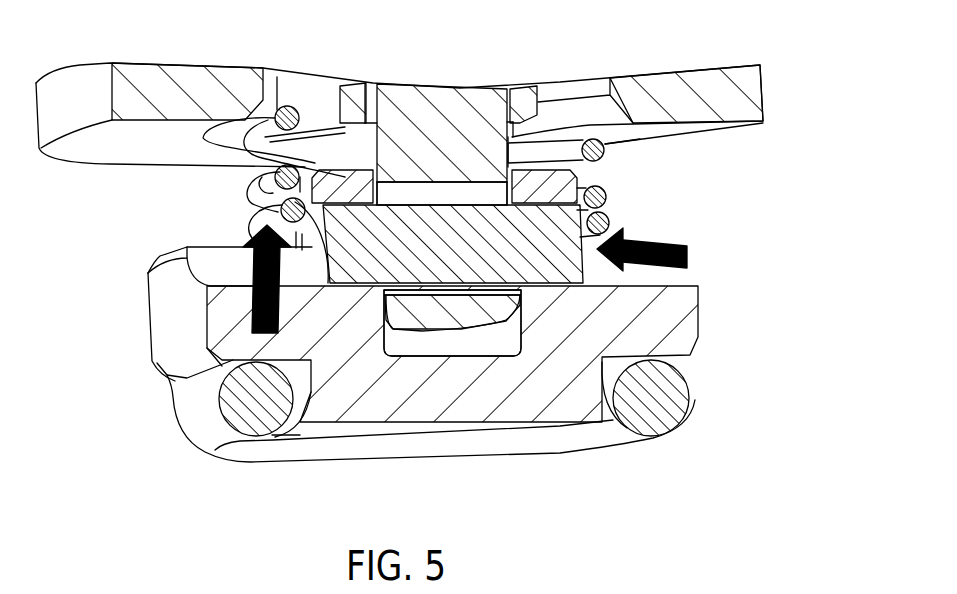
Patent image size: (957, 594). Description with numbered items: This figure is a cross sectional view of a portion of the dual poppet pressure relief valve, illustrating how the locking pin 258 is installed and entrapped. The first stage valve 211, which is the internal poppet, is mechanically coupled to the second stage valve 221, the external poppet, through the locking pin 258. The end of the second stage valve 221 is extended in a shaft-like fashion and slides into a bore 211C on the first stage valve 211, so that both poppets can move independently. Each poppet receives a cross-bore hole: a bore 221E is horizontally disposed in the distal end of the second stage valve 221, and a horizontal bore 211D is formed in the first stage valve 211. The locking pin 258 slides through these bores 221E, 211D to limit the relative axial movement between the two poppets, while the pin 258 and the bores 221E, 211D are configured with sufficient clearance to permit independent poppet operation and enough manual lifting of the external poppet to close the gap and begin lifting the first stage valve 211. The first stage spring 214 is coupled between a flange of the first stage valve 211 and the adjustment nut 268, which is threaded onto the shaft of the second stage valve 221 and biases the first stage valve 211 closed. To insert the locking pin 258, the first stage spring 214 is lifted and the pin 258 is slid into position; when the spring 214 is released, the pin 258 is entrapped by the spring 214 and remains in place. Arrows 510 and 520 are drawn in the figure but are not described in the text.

The adjustment nut 268 is at (350, 92).
The second stage valve 221 is at (429, 128).
The bore 221E is at (440, 193).
The first stage spring 214 is at (606, 201).
The locking pin 258 is at (353, 238).
The horizontal bore 211D is at (213, 268).
The upward force arrow 510 is at (248, 326).
The lateral force arrow 520 is at (687, 255).
The first stage valve 211 is at (698, 337).
The bore 211C is at (413, 345).